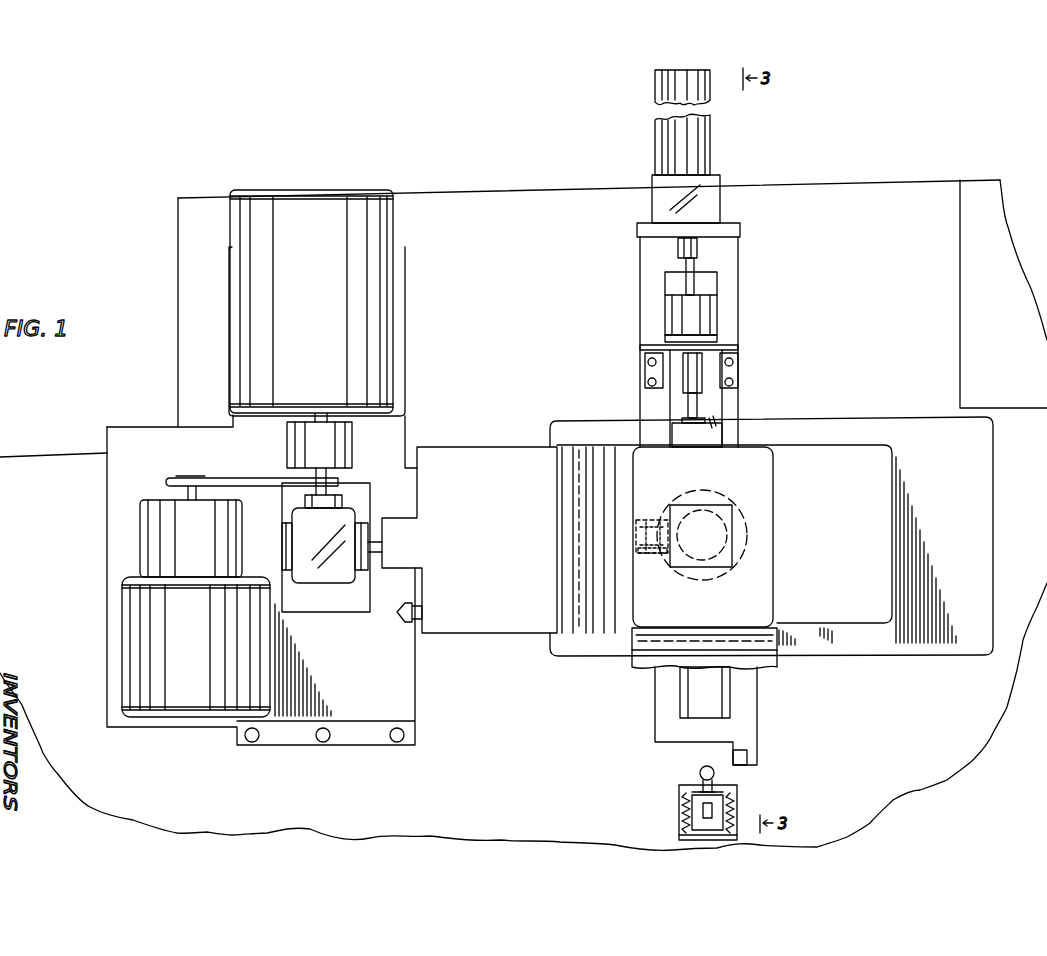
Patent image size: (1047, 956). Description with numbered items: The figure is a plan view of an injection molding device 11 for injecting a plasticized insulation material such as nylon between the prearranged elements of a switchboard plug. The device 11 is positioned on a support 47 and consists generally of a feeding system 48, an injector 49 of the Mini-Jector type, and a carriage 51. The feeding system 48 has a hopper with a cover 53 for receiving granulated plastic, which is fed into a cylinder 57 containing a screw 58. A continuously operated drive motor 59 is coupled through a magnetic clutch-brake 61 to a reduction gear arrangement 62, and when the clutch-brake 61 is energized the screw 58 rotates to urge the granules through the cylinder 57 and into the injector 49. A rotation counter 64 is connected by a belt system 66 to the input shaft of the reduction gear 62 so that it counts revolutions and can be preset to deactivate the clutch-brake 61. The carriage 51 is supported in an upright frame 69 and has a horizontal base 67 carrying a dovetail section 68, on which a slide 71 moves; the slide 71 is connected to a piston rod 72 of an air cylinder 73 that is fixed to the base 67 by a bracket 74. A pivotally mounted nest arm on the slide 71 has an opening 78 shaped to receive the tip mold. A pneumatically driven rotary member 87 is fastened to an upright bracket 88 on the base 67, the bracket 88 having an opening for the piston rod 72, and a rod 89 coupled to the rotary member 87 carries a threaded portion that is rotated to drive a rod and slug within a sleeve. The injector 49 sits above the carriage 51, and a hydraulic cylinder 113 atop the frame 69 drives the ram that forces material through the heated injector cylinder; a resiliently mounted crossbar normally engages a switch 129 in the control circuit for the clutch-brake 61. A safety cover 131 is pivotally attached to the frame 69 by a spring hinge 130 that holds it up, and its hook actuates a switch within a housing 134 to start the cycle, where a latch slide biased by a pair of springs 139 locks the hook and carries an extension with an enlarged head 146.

The injection molding device 11 is at (848, 170).
The support 47 is at (511, 197).
The feeding system 48 is at (434, 419).
The injector 49 is at (814, 419).
The carriage 51 is at (756, 382).
The cover 53 is at (499, 447).
The cylinder 57 is at (655, 522).
The screw 58 is at (646, 555).
The drive motor 59 is at (318, 197).
The magnetic clutch-brake 61 is at (352, 443).
The reduction gear arrangement 62 is at (320, 578).
The rotation counter 64 is at (200, 705).
The belt system 66 is at (253, 480).
The horizontal base 67 is at (750, 684).
The dovetail section 68 is at (713, 715).
The upright frame 69 is at (768, 475).
The slide 71 is at (677, 402).
The piston rod 72 is at (696, 268).
The air cylinder 73 is at (707, 145).
The bracket 74 is at (740, 230).
The opening 78 is at (733, 756).
The rotary member 87 is at (718, 318).
The upright bracket 88 is at (718, 344).
The rod 89 is at (704, 405).
The hydraulic cylinder 113 is at (732, 547).
The switch 129 is at (713, 437).
The spring hinge 130 is at (632, 638).
The safety cover 131 is at (778, 655).
The housing 134 is at (680, 821).
The springs 139 is at (682, 802).
The enlarged head 146 is at (700, 770).